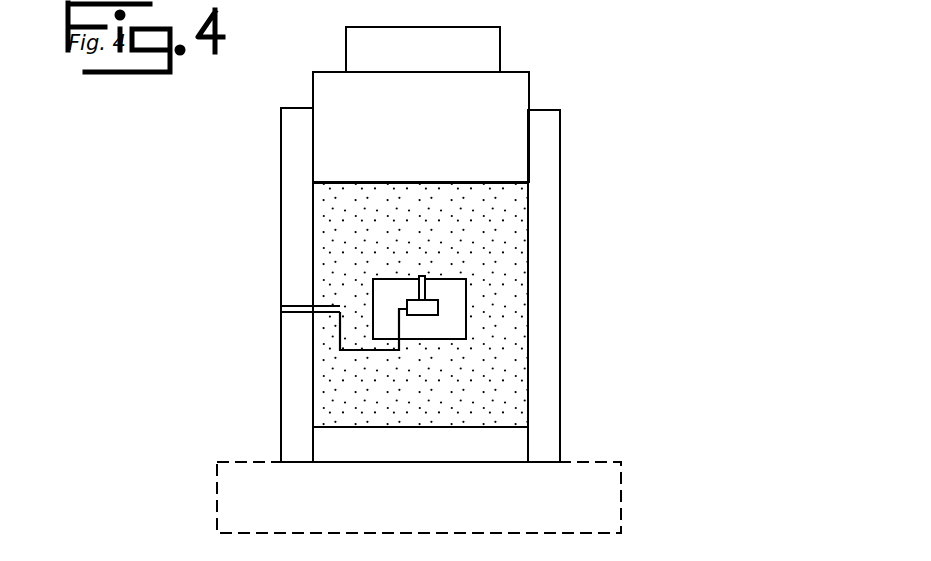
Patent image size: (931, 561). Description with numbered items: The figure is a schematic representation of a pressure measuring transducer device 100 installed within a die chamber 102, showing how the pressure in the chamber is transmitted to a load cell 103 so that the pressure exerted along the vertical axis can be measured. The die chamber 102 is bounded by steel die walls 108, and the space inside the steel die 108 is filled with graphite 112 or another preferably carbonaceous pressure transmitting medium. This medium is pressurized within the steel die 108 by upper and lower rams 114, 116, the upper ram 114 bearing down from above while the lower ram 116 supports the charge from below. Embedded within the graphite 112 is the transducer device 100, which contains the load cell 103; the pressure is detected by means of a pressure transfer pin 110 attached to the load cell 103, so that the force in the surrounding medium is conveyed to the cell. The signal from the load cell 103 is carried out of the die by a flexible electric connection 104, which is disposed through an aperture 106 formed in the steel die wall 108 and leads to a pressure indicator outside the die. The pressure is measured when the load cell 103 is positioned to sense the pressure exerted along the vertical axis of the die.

The upper ram 114 is at (498, 92).
The steel die wall 108 is at (550, 140).
The die chamber 102 is at (531, 285).
The graphite 112 is at (507, 247).
The pressure transfer pin 110 is at (428, 292).
The pressure measuring transducer device 100 is at (413, 303).
The load cell 103 is at (377, 290).
The flexible electric connection 104 is at (258, 308).
The aperture 106 is at (293, 305).
The lower ram 116 is at (333, 445).